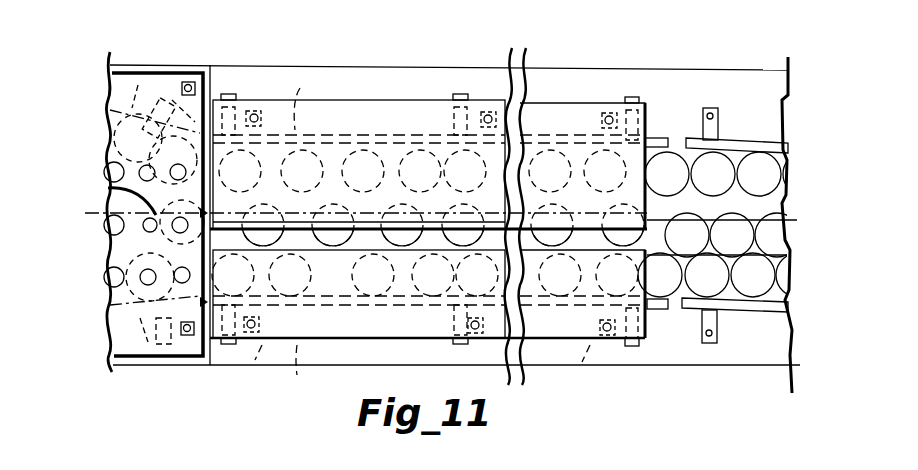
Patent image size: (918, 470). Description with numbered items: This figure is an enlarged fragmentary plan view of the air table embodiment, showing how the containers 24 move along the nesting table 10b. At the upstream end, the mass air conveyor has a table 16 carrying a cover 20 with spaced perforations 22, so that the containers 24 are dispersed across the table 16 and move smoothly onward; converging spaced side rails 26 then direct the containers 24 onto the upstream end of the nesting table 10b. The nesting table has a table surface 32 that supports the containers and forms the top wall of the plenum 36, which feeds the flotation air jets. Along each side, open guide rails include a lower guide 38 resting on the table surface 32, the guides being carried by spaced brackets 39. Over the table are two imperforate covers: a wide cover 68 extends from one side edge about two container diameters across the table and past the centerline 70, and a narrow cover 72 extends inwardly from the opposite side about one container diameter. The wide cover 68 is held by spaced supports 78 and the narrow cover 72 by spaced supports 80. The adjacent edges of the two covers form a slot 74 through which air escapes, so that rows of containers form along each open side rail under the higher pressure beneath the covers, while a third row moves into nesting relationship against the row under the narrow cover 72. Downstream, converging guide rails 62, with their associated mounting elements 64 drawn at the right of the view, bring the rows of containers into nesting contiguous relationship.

The nesting table 10b is at (424, 30).
The table 16 is at (128, 366).
The cover 20 is at (135, 80).
The perforations 22 is at (115, 190).
The containers 24 is at (782, 200).
The side rails 26 is at (162, 70).
The table surface 32 is at (330, 360).
The plenum 36 is at (214, 0).
The lower guide 38 is at (316, 237).
The brackets 39 is at (228, 94).
The converging guide rails 62 is at (770, 145).
The mounting bracket 64 is at (708, 108).
The wide cover 68 is at (362, 100).
The centerline 70 is at (795, 226).
The narrow cover 72 is at (495, 385).
The slot 74 is at (366, 240).
The supports 78 is at (258, 108).
The supports 80 is at (255, 365).